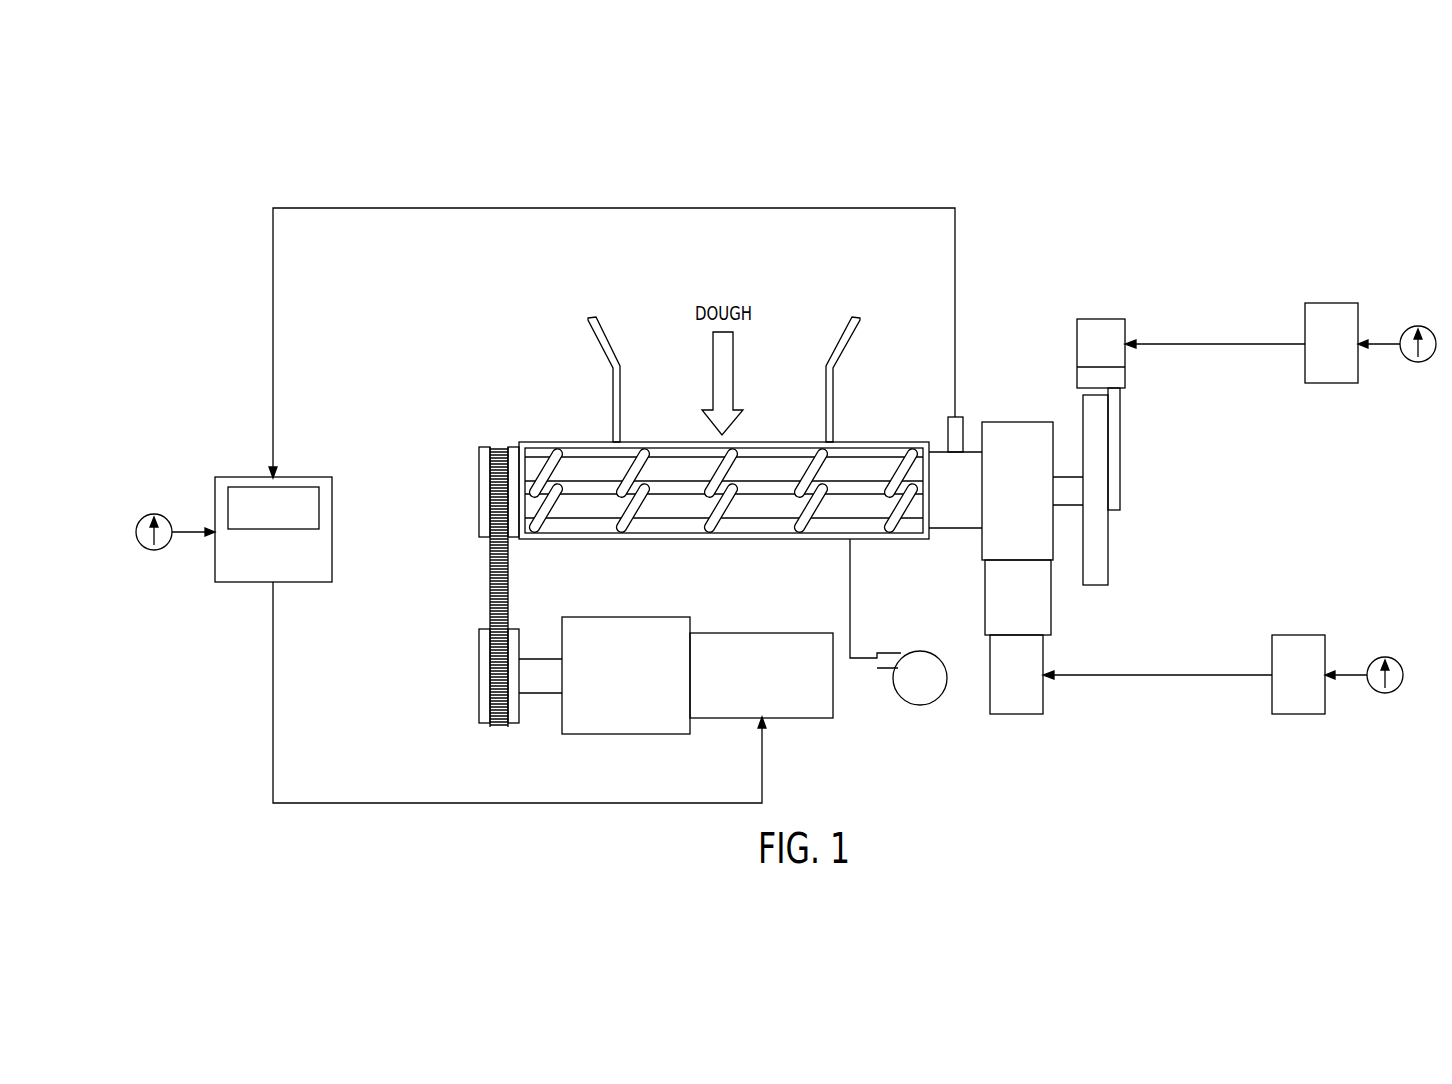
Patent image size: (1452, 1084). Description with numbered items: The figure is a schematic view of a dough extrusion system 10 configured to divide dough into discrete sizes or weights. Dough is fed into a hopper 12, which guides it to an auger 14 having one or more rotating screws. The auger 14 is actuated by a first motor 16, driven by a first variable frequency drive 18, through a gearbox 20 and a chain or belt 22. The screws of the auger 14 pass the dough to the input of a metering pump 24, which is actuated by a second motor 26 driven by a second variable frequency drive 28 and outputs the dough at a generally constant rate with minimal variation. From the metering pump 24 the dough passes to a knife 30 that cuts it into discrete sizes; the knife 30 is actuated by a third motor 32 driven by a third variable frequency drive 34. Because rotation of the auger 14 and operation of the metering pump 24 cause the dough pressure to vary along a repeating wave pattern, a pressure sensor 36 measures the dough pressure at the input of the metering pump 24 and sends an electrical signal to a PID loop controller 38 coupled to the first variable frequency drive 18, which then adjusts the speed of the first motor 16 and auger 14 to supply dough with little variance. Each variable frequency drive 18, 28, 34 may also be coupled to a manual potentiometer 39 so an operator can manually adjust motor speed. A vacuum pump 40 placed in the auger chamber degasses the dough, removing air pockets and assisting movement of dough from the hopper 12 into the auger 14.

The dough extrusion system 10 is at (1003, 197).
The hopper 12 is at (580, 310).
The auger 14 is at (697, 465).
The first motor 16 is at (795, 700).
The first variable frequency drive 18 is at (310, 565).
The gearbox 20 is at (608, 710).
The chain or belt 22 is at (496, 575).
The metering pump 24 is at (1040, 428).
The second motor 26 is at (1020, 703).
The second variable frequency drive 28 is at (1305, 650).
The knife 30 is at (1140, 470).
The third motor 32 is at (1112, 328).
The third variable frequency drive 34 is at (1330, 320).
The pressure sensor 36 is at (955, 432).
The PID loop controller 38 is at (285, 495).
The manual potentiometer 39 is at (155, 550).
The vacuum pump 40 is at (918, 700).